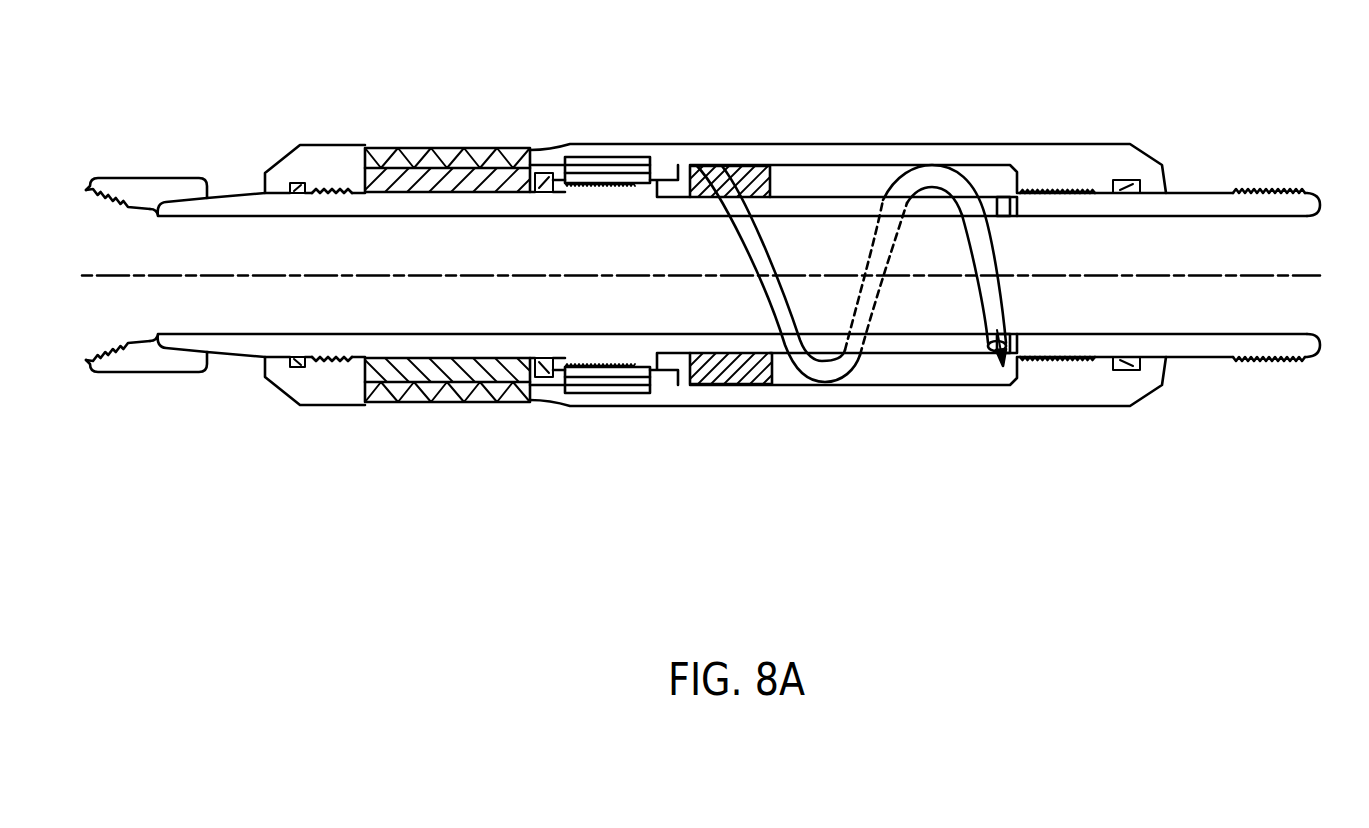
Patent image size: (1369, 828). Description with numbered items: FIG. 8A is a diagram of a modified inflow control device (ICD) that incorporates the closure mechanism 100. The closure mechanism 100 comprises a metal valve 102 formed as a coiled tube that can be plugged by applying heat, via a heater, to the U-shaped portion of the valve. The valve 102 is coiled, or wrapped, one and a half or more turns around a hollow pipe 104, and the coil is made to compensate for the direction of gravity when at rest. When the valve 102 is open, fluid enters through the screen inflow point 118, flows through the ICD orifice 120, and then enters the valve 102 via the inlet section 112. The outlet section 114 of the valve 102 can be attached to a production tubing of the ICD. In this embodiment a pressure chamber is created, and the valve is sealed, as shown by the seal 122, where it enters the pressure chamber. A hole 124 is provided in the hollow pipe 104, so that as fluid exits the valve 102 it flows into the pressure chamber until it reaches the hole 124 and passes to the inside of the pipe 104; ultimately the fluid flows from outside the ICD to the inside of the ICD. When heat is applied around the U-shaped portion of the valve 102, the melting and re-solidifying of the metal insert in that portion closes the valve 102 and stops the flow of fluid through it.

The closure mechanism 100 is at (838, 412).
The metal valve 102 is at (943, 167).
The pipe 104 is at (348, 240).
The inlet section 112 is at (722, 178).
The outlet section 114 is at (1003, 293).
The screen inflow point 118 is at (480, 148).
The ICD orifice 120 is at (607, 163).
The seal 122 is at (743, 385).
The hole 124 is at (1022, 192).